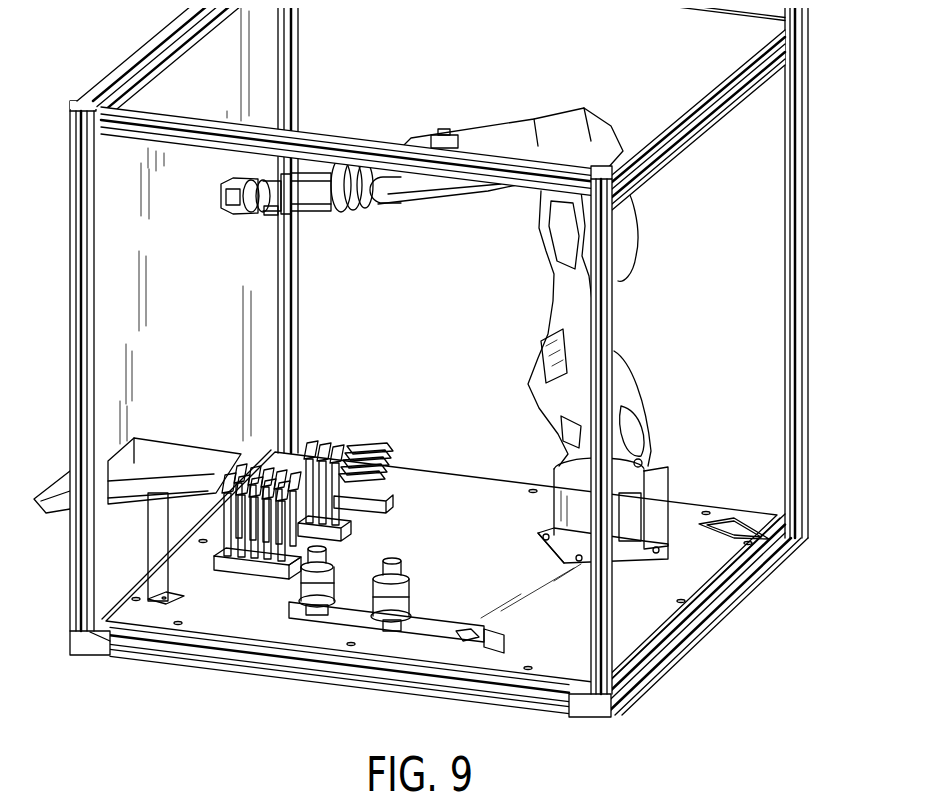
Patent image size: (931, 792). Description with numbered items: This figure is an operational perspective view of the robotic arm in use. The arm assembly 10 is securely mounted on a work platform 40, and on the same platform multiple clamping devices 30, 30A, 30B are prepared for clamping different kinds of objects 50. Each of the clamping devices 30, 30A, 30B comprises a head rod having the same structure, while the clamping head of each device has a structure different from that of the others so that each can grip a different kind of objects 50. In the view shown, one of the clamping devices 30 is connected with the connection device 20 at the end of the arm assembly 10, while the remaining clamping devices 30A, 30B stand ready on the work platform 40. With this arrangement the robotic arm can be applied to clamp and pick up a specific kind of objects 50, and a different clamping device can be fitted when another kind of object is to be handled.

The arm assembly 10 is at (523, 280).
The connection device 20 is at (311, 217).
The clamping device 30 is at (237, 223).
The clamping device 30A is at (414, 592).
The clamping device 30B is at (334, 571).
The work platform 40 is at (668, 581).
The objects 50 is at (341, 434).